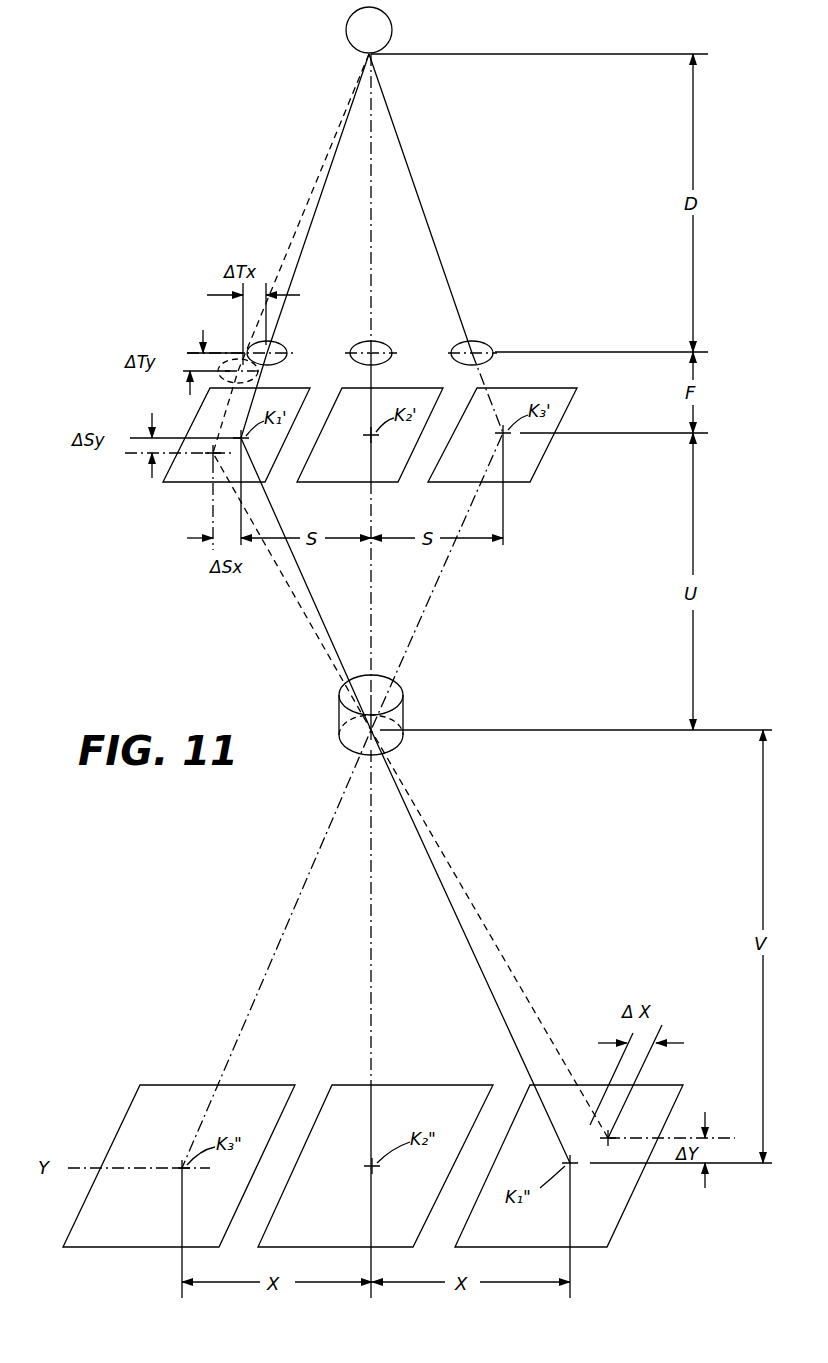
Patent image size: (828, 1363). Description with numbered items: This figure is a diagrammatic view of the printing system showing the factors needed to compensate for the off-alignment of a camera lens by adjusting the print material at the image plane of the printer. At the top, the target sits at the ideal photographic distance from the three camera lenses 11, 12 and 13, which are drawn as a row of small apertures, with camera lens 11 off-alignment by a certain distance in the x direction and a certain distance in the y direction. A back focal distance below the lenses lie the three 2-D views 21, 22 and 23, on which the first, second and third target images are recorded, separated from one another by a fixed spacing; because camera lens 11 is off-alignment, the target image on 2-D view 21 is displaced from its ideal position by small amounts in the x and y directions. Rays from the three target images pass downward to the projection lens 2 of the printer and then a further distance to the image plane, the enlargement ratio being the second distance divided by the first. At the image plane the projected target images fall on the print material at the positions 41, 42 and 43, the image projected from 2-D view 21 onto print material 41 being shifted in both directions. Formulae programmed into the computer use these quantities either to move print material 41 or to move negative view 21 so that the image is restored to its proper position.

The projection lens 2 is at (398, 716).
The camera lens 11 is at (280, 347).
The camera lens 12 is at (381, 345).
The camera lens 13 is at (484, 345).
The 2-D view 21 is at (284, 386).
The 2-D view 22 is at (402, 388).
The 2-D view 23 is at (552, 386).
The print material 41 is at (668, 1085).
The print material position 42 is at (430, 1085).
The print material position 43 is at (158, 1085).